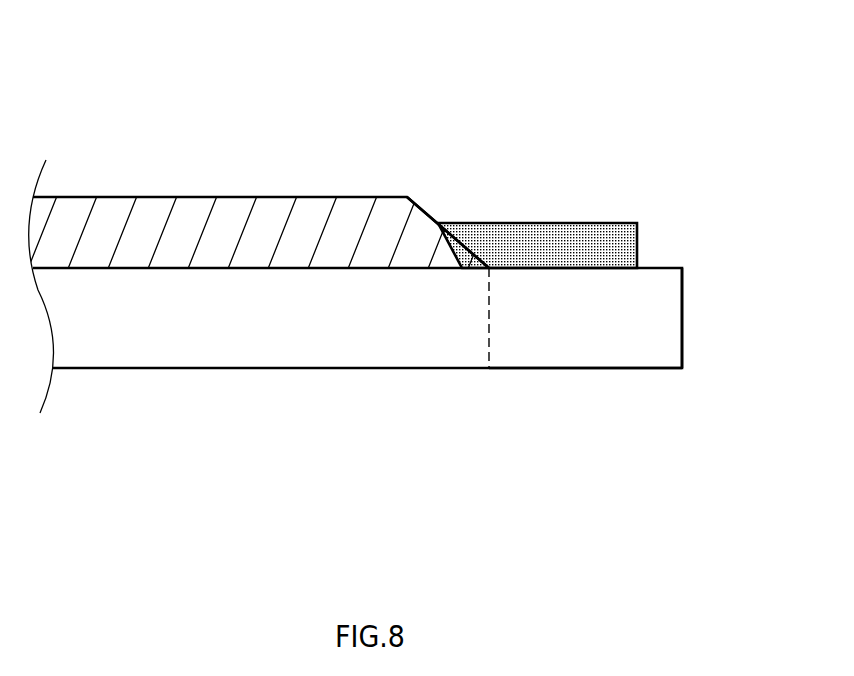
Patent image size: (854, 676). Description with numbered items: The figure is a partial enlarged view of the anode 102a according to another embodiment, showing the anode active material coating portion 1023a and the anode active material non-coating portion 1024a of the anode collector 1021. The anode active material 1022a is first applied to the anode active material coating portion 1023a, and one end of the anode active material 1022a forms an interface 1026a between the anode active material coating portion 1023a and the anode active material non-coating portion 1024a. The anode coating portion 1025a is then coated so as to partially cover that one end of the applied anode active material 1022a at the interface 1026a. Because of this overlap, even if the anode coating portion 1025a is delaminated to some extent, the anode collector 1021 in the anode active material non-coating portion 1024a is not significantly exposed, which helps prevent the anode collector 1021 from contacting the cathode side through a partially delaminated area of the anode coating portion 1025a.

The anode 102a is at (542, 72).
The anode collector 1021 is at (667, 318).
The anode active material 1022a is at (227, 208).
The anode active material coating portion 1023a is at (248, 402).
The anode active material non-coating portion 1024a is at (539, 402).
The anode coating portion 1025a is at (558, 235).
The interface 1026a is at (429, 208).